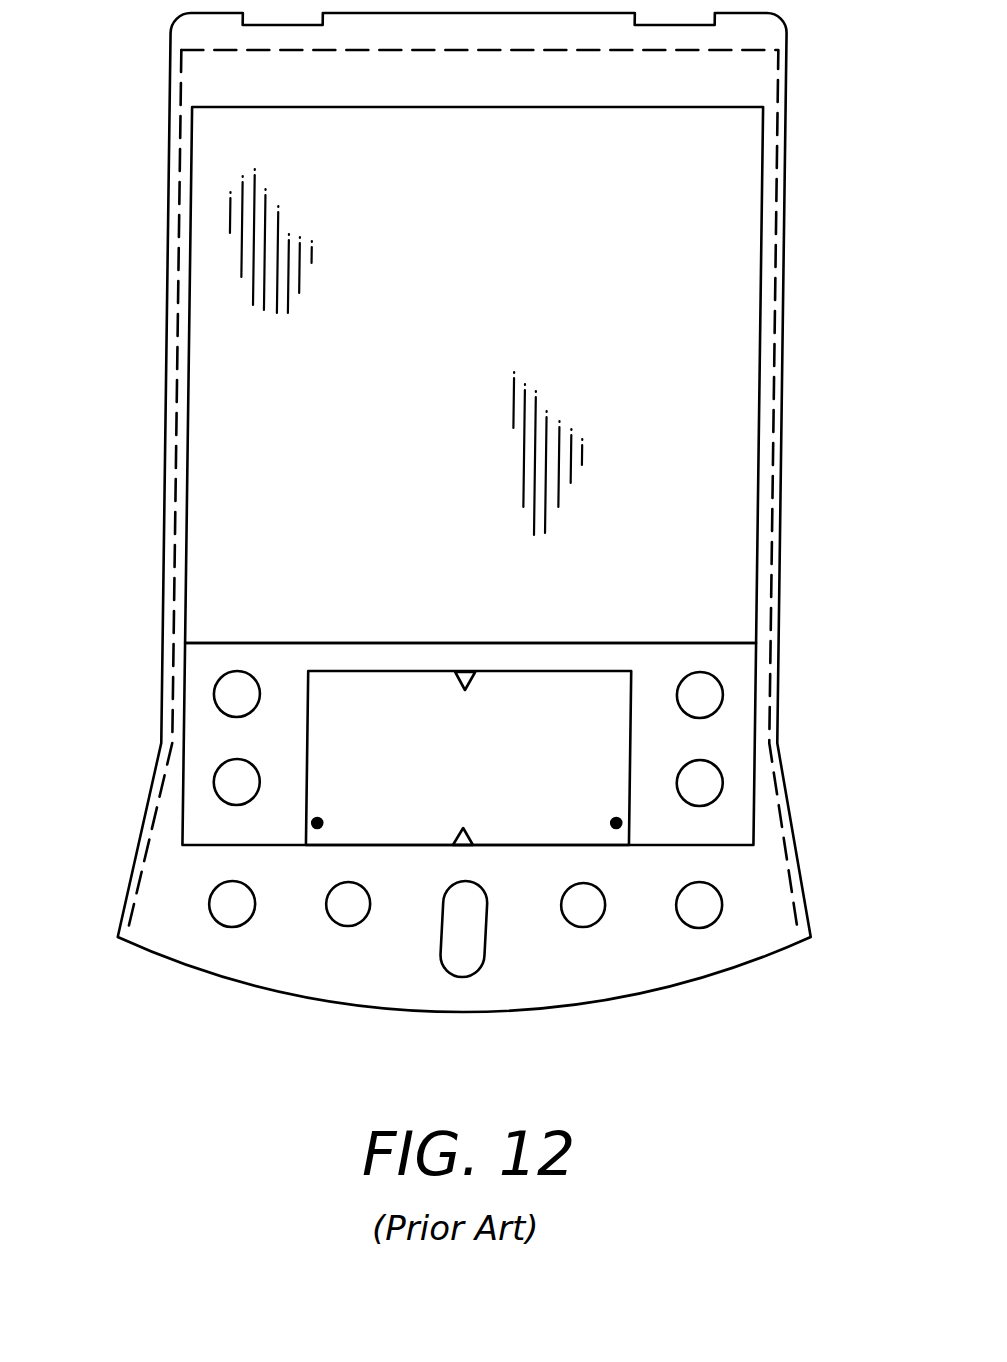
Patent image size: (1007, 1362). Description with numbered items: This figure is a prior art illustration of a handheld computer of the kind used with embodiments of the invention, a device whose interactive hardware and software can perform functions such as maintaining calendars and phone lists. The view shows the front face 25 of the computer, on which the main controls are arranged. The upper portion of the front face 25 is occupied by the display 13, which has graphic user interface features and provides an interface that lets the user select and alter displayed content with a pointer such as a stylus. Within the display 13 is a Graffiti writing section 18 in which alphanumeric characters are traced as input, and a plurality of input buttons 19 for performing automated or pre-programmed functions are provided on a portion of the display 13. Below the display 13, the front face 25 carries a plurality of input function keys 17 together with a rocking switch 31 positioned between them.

The front face 25 is at (692, 52).
The display 13 is at (500, 596).
The Graffiti writing section 18 is at (492, 771).
The input buttons 19 is at (245, 785).
The input function keys 17 is at (240, 905).
The rocking switch 31 is at (467, 953).